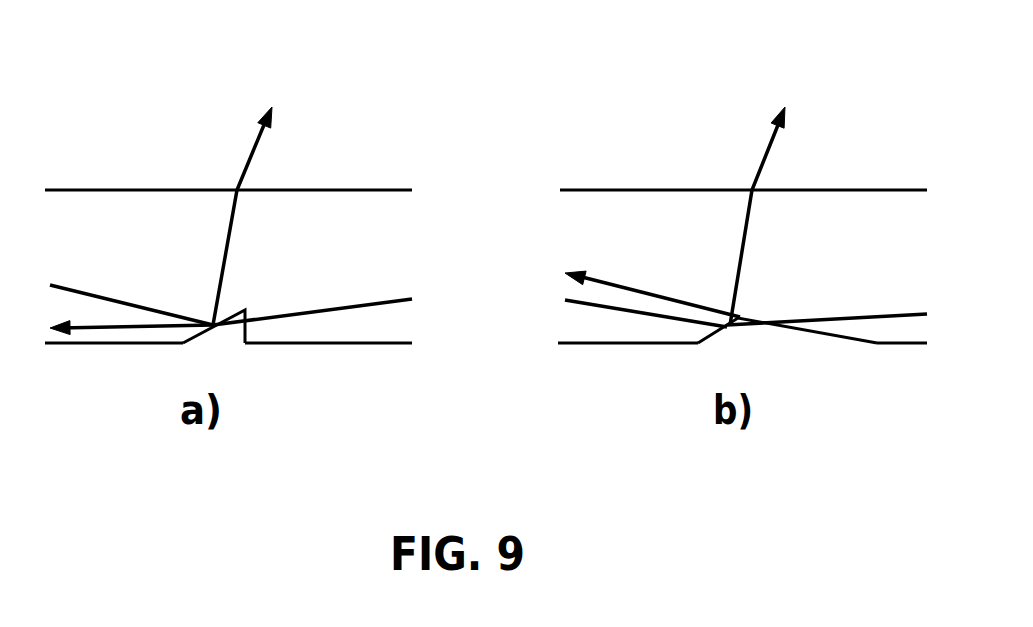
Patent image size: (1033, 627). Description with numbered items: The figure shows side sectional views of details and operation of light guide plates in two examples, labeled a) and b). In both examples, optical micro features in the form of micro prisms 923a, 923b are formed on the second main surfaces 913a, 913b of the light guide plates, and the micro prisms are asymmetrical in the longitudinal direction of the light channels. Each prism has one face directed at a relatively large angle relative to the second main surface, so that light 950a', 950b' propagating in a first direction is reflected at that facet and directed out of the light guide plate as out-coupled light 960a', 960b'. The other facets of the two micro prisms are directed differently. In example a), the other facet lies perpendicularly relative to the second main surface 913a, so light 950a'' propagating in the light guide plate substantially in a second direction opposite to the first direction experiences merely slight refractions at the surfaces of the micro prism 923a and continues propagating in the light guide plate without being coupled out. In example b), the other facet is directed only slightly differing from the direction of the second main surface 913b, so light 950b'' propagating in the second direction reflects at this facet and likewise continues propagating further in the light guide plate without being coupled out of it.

The second main surface 913a is at (307, 343).
The micro prism 923a is at (220, 337).
The light propagating in first direction 950a' is at (131, 220).
The light propagating in second direction 950a'' is at (314, 211).
The out-coupled light 960a' is at (237, 165).
The second main surface 913b is at (655, 345).
The micro prism 923b is at (743, 335).
The light propagating in first direction 950b' is at (646, 211).
The light propagating in second direction 950b'' is at (827, 229).
The out-coupled light 960b' is at (724, 180).